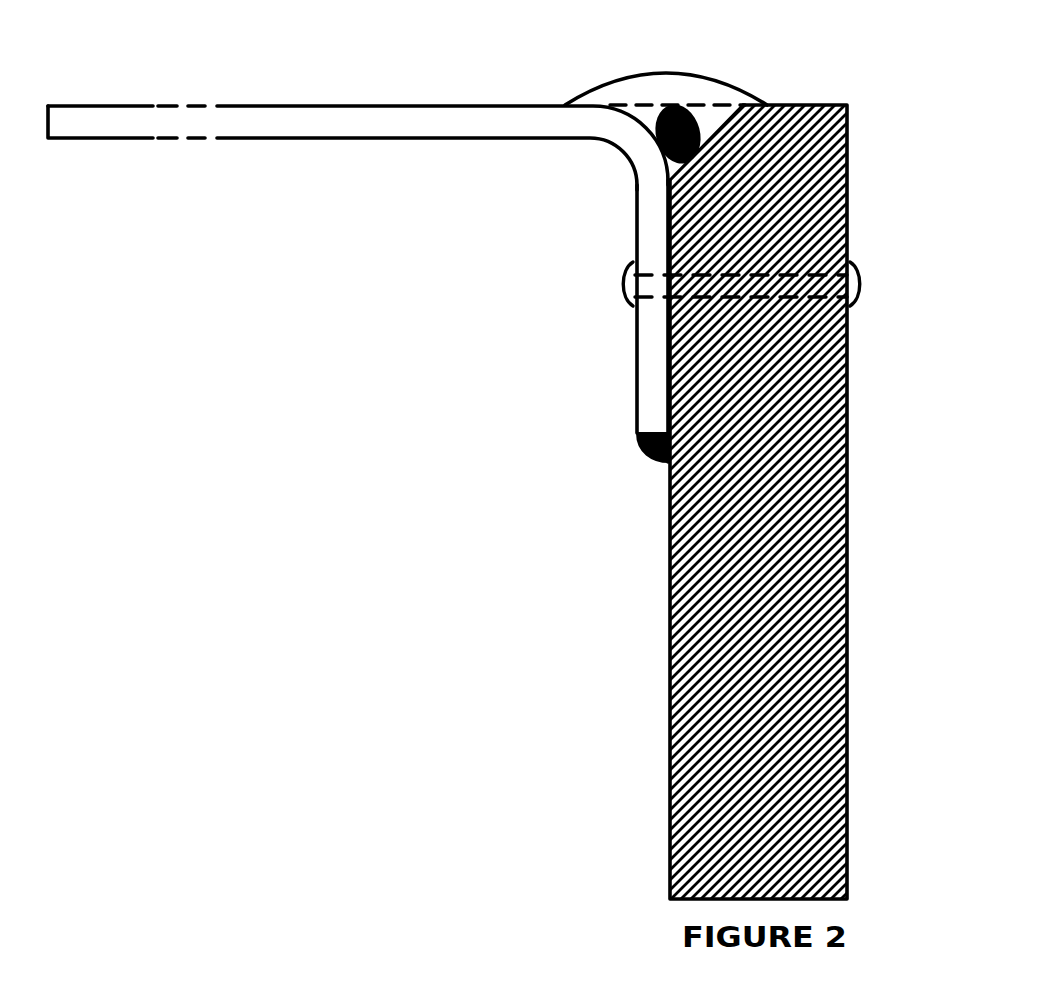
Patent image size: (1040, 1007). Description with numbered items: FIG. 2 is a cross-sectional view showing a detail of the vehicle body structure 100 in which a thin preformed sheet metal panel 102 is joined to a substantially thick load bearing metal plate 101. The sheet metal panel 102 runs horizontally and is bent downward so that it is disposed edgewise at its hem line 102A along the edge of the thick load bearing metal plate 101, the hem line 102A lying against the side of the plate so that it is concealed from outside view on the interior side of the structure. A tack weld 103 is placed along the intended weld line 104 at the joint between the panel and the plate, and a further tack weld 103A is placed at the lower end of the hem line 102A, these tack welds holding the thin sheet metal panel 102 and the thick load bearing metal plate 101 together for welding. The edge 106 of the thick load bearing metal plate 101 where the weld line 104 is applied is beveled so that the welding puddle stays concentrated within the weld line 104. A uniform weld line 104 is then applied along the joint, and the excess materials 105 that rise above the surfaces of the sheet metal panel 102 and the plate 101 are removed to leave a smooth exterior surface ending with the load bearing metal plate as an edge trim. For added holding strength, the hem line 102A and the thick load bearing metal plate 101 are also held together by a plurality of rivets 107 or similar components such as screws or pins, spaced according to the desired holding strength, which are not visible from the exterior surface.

The vehicle body structure 100 is at (867, 95).
The thick load bearing metal plate 101 is at (807, 488).
The sheet metal panel 102 is at (428, 120).
The hem line 102A is at (650, 345).
The tack weld 103 is at (660, 147).
The tack weld 103A is at (640, 458).
The weld line 104 is at (660, 90).
The excess materials 105 is at (697, 73).
The edge 106 is at (720, 135).
The rivets 107 is at (622, 284).